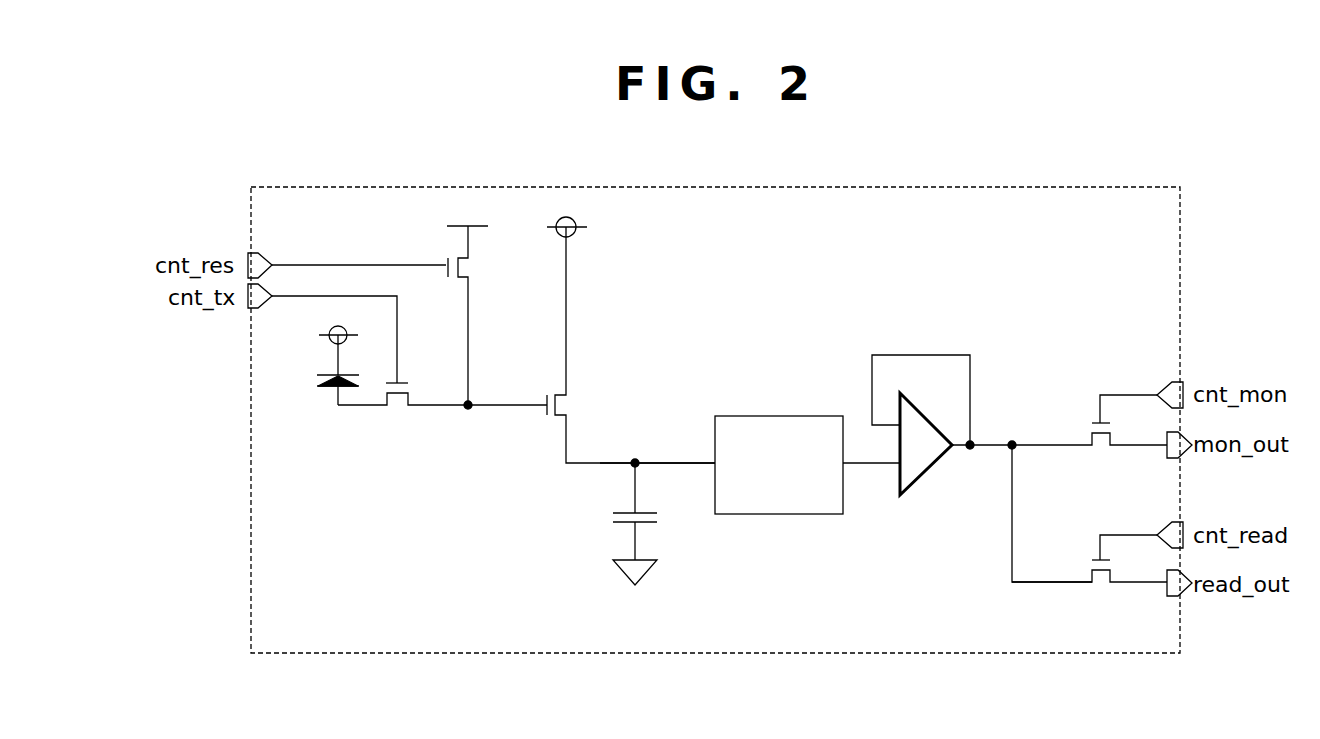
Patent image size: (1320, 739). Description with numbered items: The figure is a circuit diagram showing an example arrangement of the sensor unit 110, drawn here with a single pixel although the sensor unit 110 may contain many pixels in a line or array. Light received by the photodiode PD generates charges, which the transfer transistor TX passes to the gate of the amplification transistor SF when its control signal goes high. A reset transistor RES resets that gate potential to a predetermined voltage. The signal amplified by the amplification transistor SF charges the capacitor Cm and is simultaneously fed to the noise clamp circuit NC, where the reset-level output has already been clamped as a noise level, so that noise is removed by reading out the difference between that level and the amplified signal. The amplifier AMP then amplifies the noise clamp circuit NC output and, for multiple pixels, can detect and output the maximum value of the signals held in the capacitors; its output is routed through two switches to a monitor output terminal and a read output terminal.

The sensor unit 110 is at (423, 653).
The photodiode PD is at (325, 388).
The transfer transistor TX is at (397, 407).
The reset transistor RES is at (445, 263).
The amplification transistor SF is at (563, 403).
The capacitor Cm is at (627, 527).
The noise clamp circuit NC is at (763, 415).
The amplifier AMP is at (922, 482).